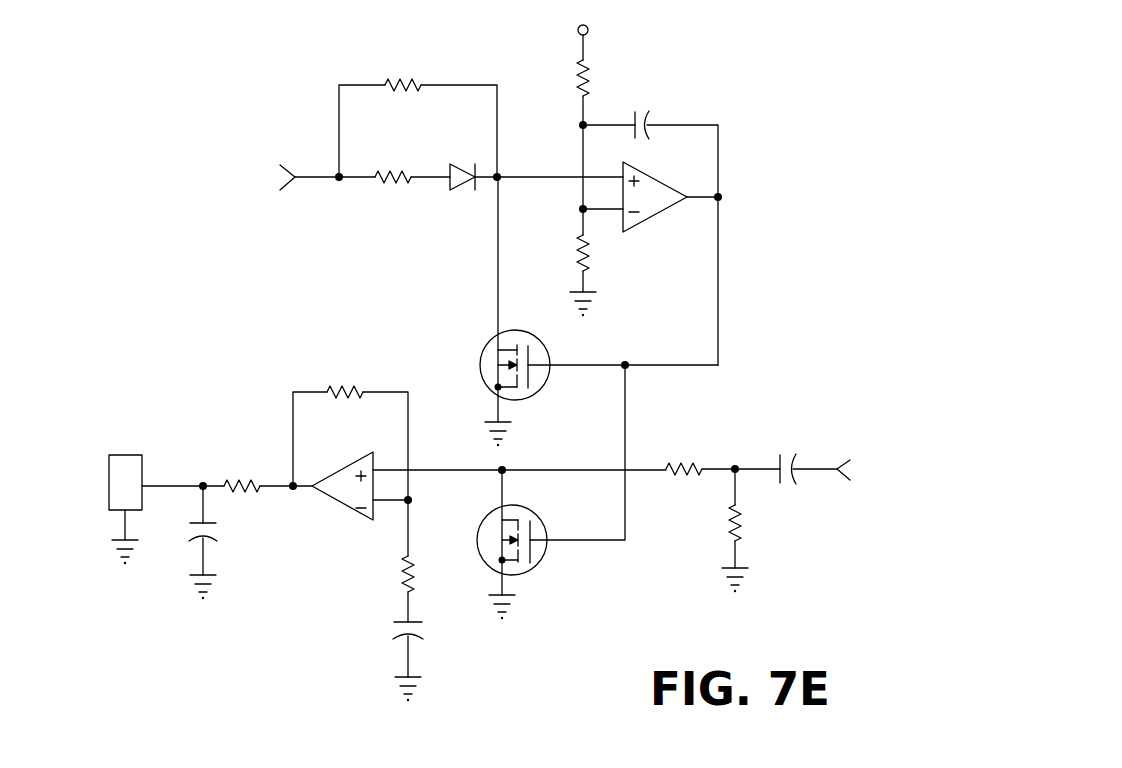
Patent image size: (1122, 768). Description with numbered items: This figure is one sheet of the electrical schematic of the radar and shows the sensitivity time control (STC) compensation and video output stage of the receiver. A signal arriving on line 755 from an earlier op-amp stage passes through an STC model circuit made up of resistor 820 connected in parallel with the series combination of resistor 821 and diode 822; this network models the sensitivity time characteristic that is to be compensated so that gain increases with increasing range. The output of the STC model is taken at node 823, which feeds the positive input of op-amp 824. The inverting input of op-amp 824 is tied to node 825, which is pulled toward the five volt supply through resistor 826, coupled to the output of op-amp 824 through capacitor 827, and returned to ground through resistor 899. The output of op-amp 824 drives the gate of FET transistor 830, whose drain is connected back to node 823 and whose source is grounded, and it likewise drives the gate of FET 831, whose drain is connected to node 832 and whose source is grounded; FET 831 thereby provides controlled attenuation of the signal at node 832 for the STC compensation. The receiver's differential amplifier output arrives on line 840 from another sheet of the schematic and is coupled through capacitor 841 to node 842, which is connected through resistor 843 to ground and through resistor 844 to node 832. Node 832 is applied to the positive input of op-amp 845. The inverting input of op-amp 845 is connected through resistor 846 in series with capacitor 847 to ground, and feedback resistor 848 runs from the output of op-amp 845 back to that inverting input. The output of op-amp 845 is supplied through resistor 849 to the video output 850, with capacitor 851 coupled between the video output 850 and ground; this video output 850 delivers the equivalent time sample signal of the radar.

The line 755 is at (317, 175).
The resistor 820 is at (407, 77).
The resistor 821 is at (393, 168).
The diode 822 is at (450, 188).
The node 823 is at (500, 173).
The op-amp 824 is at (670, 183).
The node 825 is at (580, 210).
The resistor 826 is at (590, 75).
The capacitor 827 is at (650, 118).
The resistor 899 is at (590, 255).
The FET transistor 830 is at (485, 347).
The FET 831 is at (540, 565).
The node 832 is at (502, 470).
The line 840 is at (817, 463).
The capacitor 841 is at (797, 482).
The node 842 is at (735, 465).
The resistor 843 is at (742, 518).
The resistor 844 is at (682, 480).
The op-amp 845 is at (330, 497).
The resistor 846 is at (410, 570).
The capacitor 847 is at (420, 632).
The resistor 848 is at (350, 390).
The resistor 849 is at (238, 484).
The video output 850 is at (130, 455).
The capacitor 851 is at (215, 537).